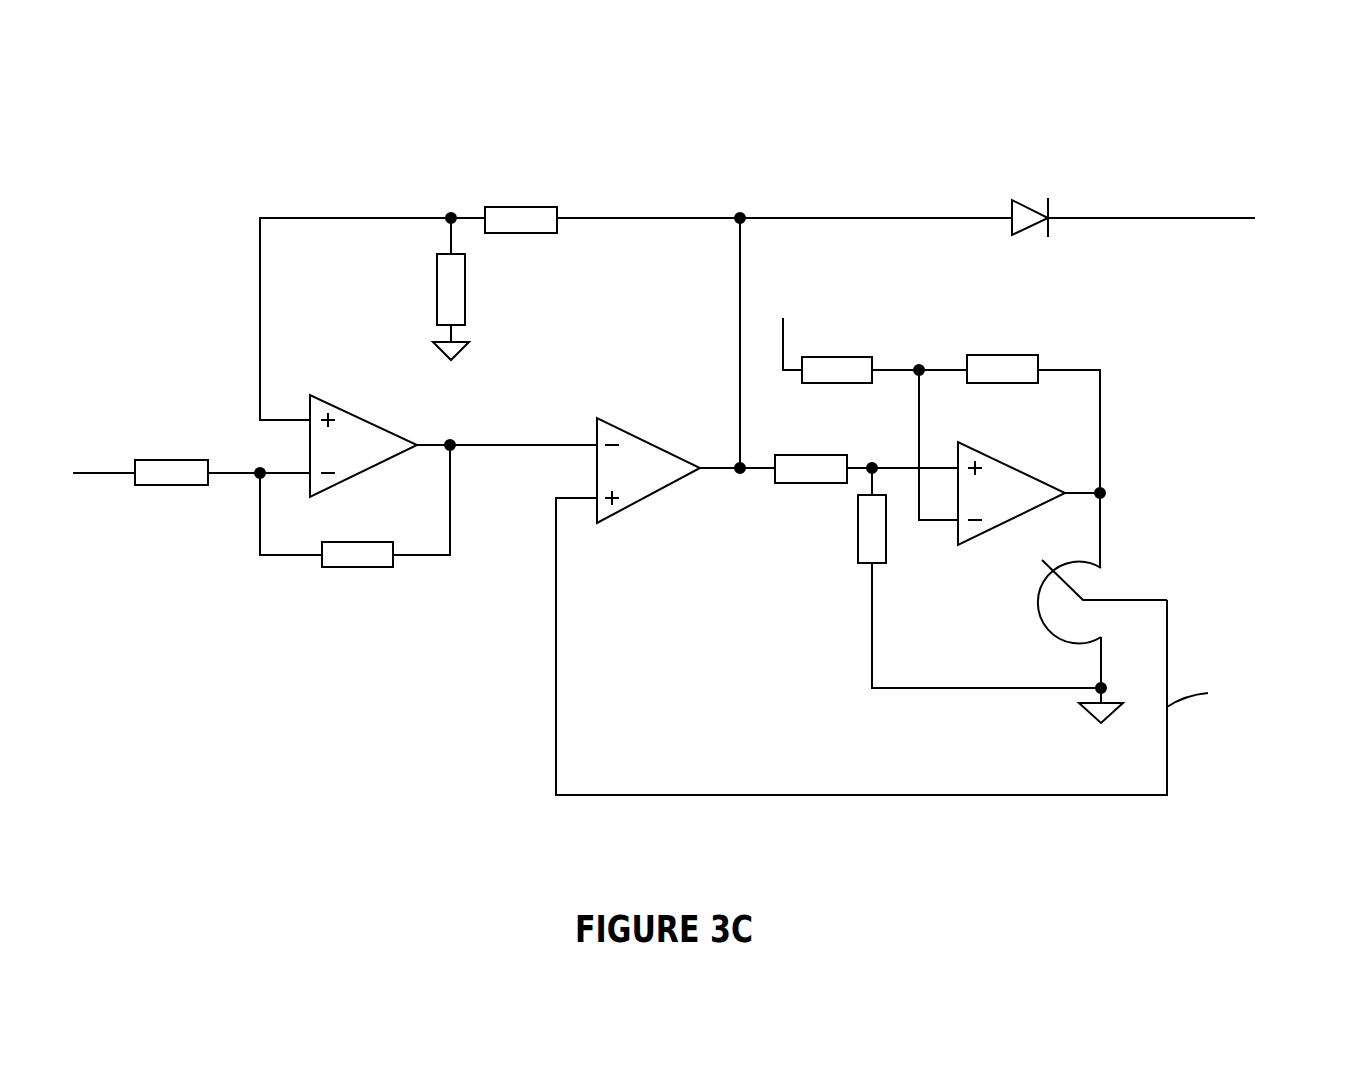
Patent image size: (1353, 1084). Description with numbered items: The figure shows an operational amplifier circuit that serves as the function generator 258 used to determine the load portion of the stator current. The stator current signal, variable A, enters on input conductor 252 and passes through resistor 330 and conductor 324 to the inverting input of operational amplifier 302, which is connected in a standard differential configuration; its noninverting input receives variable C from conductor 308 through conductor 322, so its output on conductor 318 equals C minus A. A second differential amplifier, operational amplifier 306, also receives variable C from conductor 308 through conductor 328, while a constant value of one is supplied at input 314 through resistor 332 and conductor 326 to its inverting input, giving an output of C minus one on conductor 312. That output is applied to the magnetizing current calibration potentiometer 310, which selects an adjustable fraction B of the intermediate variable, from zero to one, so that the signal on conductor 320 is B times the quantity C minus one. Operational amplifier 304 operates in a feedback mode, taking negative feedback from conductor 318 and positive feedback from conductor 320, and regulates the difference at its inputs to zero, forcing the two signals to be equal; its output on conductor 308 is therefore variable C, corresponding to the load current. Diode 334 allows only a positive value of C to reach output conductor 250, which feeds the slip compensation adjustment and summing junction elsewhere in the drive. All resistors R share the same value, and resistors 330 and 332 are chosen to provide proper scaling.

The function generator 258 is at (1243, 106).
The input conductor 252 is at (115, 478).
The resistor 330 is at (145, 487).
The conductor 324 is at (222, 473).
The operational amplifier 302 is at (382, 407).
The conductor 318 is at (423, 443).
The conductor 322 is at (352, 218).
The operational amplifier 304 is at (688, 440).
The conductor 308 is at (715, 217).
The diode 334 is at (1030, 203).
The output conductor 250 is at (1128, 217).
The input 314 is at (785, 335).
The resistor 332 is at (857, 383).
The conductor 326 is at (923, 377).
The conductor 328 is at (902, 467).
The operational amplifier 306 is at (992, 455).
The conductor 312 is at (1102, 547).
The potentiometer 310 is at (1050, 627).
The conductor 320 is at (1015, 790).